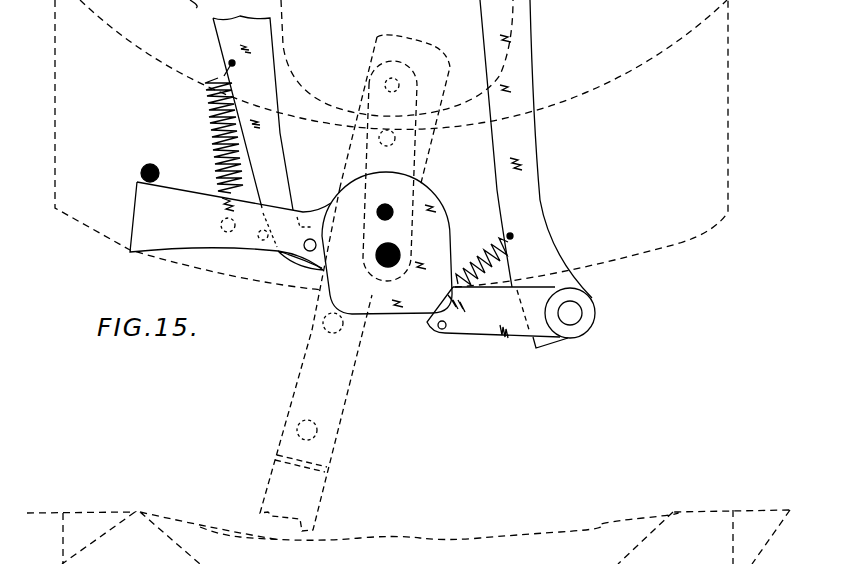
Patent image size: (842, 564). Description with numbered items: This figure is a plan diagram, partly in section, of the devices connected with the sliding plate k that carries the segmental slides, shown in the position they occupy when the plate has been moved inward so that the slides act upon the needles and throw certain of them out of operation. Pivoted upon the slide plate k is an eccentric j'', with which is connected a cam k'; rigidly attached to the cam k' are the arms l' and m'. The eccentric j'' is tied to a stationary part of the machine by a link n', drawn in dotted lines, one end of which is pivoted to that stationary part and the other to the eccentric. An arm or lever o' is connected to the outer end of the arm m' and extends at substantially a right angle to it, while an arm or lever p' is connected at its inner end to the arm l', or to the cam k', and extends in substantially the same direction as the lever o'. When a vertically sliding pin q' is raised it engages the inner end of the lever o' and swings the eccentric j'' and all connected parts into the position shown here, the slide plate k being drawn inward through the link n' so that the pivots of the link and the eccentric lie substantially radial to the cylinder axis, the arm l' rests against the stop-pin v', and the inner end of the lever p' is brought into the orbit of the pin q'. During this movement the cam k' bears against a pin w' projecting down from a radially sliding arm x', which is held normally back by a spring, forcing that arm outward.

The reciprocatory slide plate k is at (391, 145).
The pin q' is at (192, 15).
The arm or lever p' is at (249, 113).
The stop-pin v' is at (161, 170).
The arm l' is at (230, 226).
The link n' is at (395, 158).
The pin w' is at (331, 334).
The radially sliding arm x' is at (316, 359).
The cam k' is at (387, 243).
The pin i'' is at (372, 209).
The eccentric j'' is at (370, 247).
The arm or lever o' is at (537, 174).
The arm m' is at (493, 285).